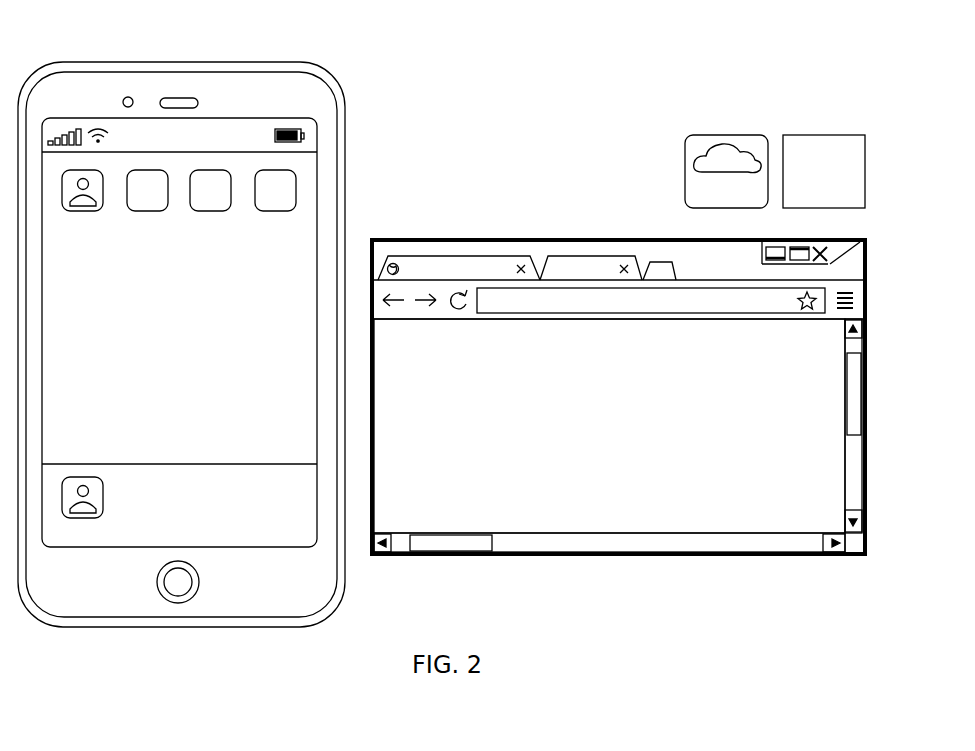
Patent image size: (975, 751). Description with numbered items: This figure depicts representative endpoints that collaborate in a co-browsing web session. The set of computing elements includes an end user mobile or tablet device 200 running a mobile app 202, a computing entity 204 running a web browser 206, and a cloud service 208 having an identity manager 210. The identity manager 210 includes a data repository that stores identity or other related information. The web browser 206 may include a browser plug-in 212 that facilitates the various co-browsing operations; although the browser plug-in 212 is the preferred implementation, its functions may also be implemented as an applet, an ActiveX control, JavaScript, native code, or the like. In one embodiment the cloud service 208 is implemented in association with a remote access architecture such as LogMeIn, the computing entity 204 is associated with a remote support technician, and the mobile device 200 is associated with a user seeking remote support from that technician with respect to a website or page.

The end user mobile or tablet device 200 is at (126, 60).
The mobile app 202 is at (105, 497).
The computing entity 204 is at (541, 238).
The web browser 206 is at (459, 256).
The cloud service 208 is at (685, 170).
The identity manager 210 is at (866, 172).
The browser plug-in 212 is at (686, 269).